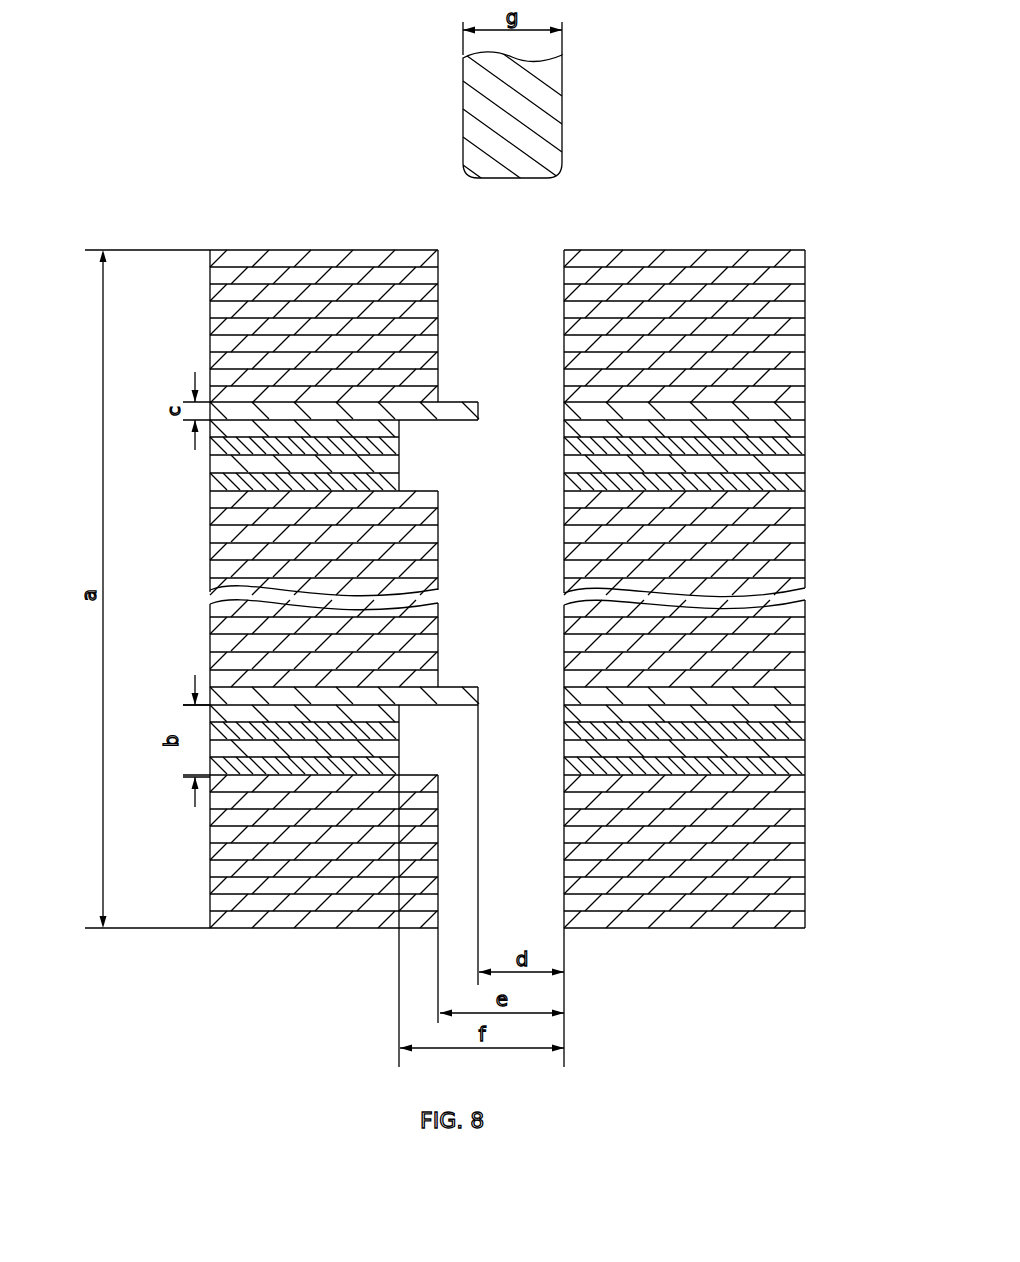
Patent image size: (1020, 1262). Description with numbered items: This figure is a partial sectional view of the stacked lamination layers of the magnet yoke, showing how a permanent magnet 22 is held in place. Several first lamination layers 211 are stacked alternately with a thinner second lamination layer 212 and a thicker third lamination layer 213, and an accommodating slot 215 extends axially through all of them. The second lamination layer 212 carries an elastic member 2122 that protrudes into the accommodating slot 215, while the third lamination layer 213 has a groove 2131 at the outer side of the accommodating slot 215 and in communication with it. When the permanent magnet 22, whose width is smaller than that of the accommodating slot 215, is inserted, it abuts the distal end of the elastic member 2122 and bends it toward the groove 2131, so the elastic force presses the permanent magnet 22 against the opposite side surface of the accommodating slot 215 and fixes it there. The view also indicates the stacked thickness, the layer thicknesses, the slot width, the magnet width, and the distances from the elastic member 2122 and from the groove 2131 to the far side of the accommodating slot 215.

The permanent magnet 22 is at (520, 120).
The accommodating slot 215 is at (517, 272).
The first lamination layer 211 is at (228, 328).
The second lamination layer 212 is at (288, 408).
The third lamination layer 213 is at (237, 455).
The groove 2131 is at (420, 458).
The elastic member 2122 is at (448, 686).